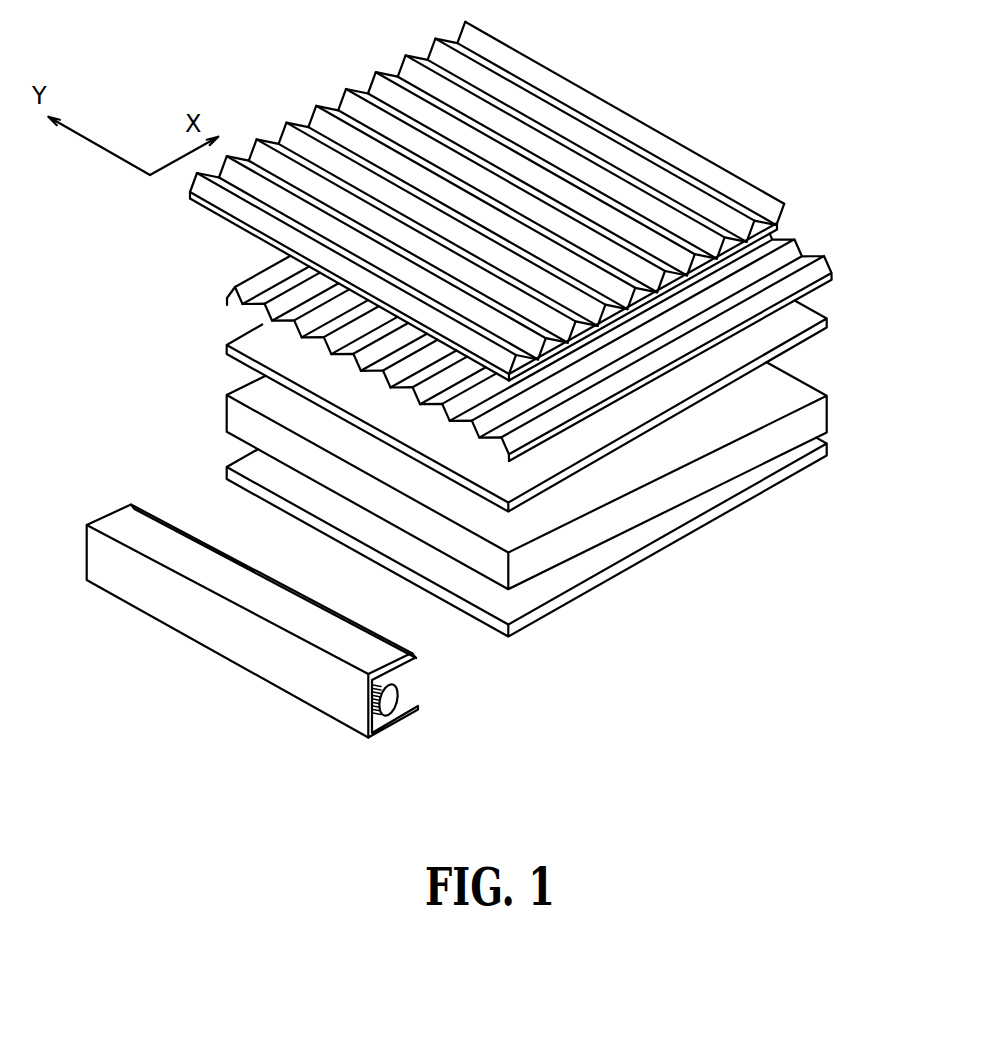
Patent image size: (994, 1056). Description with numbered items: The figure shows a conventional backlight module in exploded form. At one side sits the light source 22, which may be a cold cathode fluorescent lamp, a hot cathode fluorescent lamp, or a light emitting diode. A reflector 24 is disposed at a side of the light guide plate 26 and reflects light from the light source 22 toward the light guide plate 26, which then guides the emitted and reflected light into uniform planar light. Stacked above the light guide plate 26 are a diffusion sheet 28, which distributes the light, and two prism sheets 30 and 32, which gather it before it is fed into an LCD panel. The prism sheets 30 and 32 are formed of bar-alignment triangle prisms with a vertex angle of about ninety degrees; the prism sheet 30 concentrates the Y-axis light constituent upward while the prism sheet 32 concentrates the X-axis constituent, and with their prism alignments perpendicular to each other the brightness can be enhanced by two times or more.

The light source 22 is at (394, 705).
The reflector 24 is at (657, 545).
The light guide plate 26 is at (718, 458).
The diffusion sheet 28 is at (817, 335).
The prism sheet 30 is at (823, 283).
The prism sheet 32 is at (782, 219).